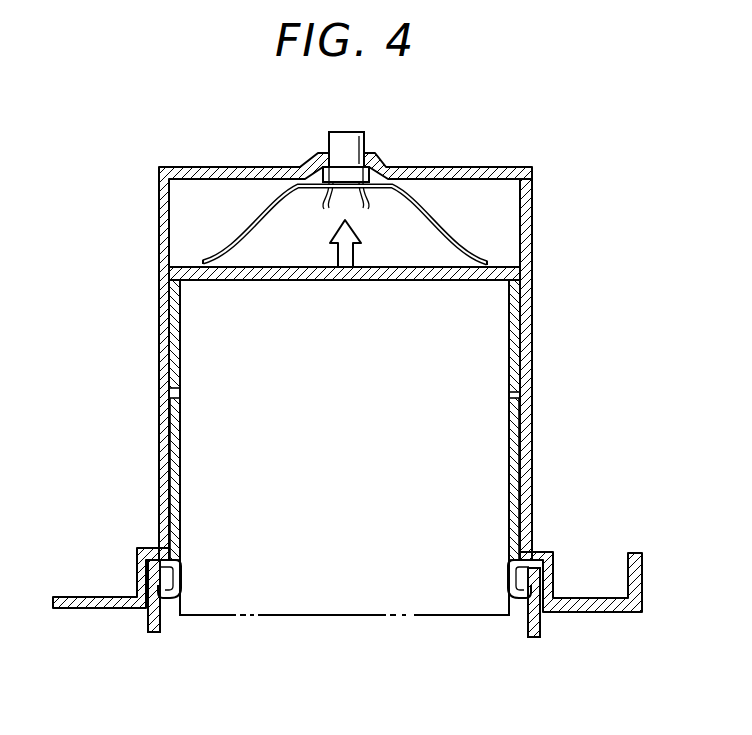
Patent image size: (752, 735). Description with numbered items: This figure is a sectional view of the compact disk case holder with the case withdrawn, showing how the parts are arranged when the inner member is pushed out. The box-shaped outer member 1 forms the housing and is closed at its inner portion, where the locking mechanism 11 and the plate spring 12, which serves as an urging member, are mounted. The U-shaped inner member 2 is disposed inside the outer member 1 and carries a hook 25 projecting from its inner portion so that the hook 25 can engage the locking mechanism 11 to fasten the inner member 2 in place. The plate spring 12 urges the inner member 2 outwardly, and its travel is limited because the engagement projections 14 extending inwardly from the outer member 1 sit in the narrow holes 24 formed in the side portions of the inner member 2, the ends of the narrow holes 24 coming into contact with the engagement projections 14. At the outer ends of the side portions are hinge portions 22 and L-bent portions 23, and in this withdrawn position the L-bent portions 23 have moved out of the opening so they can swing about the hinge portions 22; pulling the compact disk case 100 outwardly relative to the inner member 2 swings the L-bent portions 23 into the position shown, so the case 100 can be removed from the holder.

The outer member 1 is at (534, 212).
The inner member 2 is at (351, 281).
The locking mechanism 11 is at (355, 132).
The plate spring 12 is at (433, 217).
The engagement projection 14 is at (181, 388).
The hinge portion 22 is at (182, 587).
The L-bent portion 23 is at (150, 617).
The narrow hole 24 is at (181, 452).
The hook 25 is at (332, 217).
The compact disk case 100 is at (312, 592).